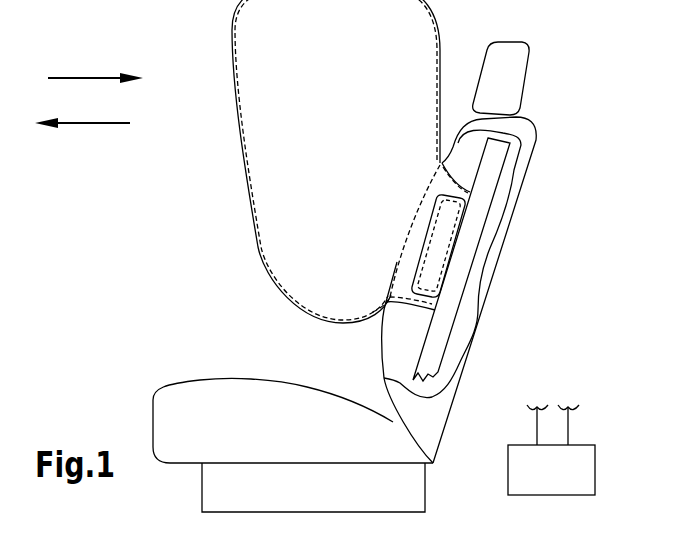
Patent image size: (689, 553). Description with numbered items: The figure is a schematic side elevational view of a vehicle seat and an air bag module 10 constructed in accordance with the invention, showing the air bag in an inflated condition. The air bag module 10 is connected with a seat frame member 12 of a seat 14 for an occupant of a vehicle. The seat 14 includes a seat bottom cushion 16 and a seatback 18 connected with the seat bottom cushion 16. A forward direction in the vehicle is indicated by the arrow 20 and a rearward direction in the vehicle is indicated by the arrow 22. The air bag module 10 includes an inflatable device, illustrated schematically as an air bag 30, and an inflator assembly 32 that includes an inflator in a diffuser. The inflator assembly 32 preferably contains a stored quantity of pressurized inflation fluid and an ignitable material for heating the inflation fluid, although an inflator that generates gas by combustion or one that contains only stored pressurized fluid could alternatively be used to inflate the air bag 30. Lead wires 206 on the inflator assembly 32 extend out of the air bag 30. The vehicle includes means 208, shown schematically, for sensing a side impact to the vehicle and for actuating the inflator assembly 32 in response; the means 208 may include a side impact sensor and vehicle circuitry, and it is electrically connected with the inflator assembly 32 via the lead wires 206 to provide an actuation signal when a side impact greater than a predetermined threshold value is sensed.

The air bag module 10 is at (214, 233).
The seat frame member 12 is at (487, 190).
The seat 14 is at (162, 344).
The seat bottom cushion 16 is at (247, 378).
The seatback 18 is at (448, 428).
The arrow indicating forward direction 20 is at (107, 125).
The arrow indicating rearward direction 22 is at (73, 78).
The air bag 30 is at (221, 25).
The inflator assembly 32 is at (432, 257).
The lead wires 206 is at (568, 422).
The means for sensing a side impact 208 is at (570, 495).